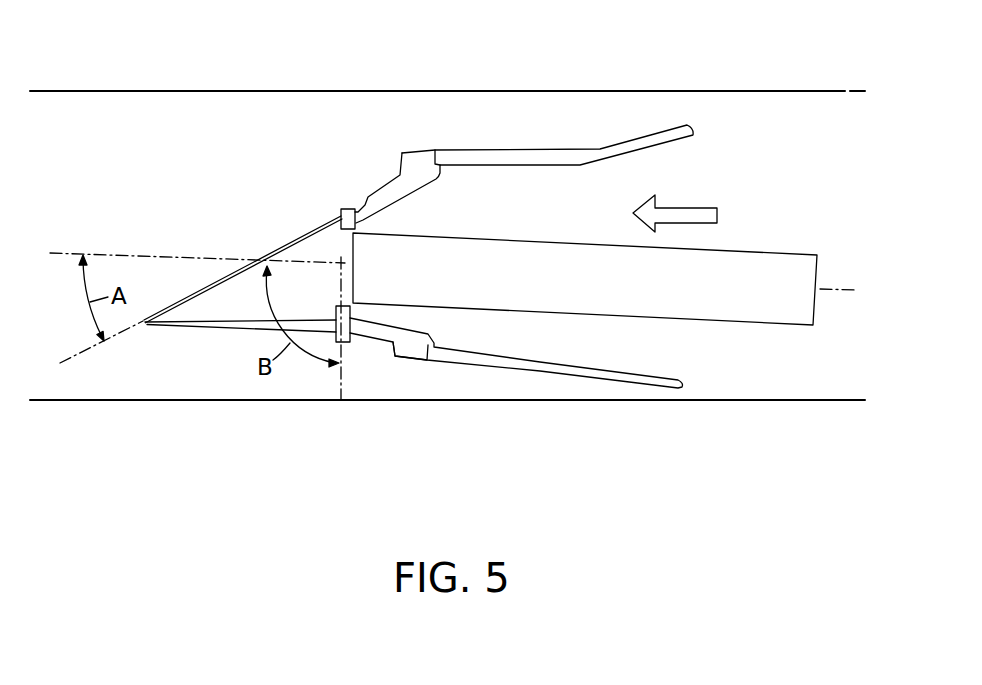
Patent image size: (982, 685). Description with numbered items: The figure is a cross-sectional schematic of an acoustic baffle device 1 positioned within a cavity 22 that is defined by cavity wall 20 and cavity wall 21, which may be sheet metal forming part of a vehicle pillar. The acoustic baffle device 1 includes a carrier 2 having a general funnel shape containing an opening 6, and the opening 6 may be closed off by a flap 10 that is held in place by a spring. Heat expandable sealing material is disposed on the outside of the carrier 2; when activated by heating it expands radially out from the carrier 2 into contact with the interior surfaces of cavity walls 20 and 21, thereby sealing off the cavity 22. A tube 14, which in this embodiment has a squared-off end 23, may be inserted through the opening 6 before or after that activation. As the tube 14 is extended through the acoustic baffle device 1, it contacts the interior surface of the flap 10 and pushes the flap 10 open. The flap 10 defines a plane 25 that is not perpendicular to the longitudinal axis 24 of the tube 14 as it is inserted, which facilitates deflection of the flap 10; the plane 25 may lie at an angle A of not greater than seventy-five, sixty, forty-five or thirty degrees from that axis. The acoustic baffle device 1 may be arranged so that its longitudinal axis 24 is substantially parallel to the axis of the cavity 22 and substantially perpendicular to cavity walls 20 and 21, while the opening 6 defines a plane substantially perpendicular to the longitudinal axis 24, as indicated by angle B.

The acoustic baffle device 1 is at (553, 160).
The carrier 2 is at (530, 150).
The opening 6 is at (338, 243).
The flap 10 is at (414, 319).
The tube 14 is at (748, 324).
The cavity wall 20 is at (645, 82).
The cavity wall 21 is at (718, 401).
The cavity 22 is at (804, 137).
The squared-off end 23 is at (338, 264).
The longitudinal axis 24 is at (152, 257).
The plane 25 is at (125, 331).